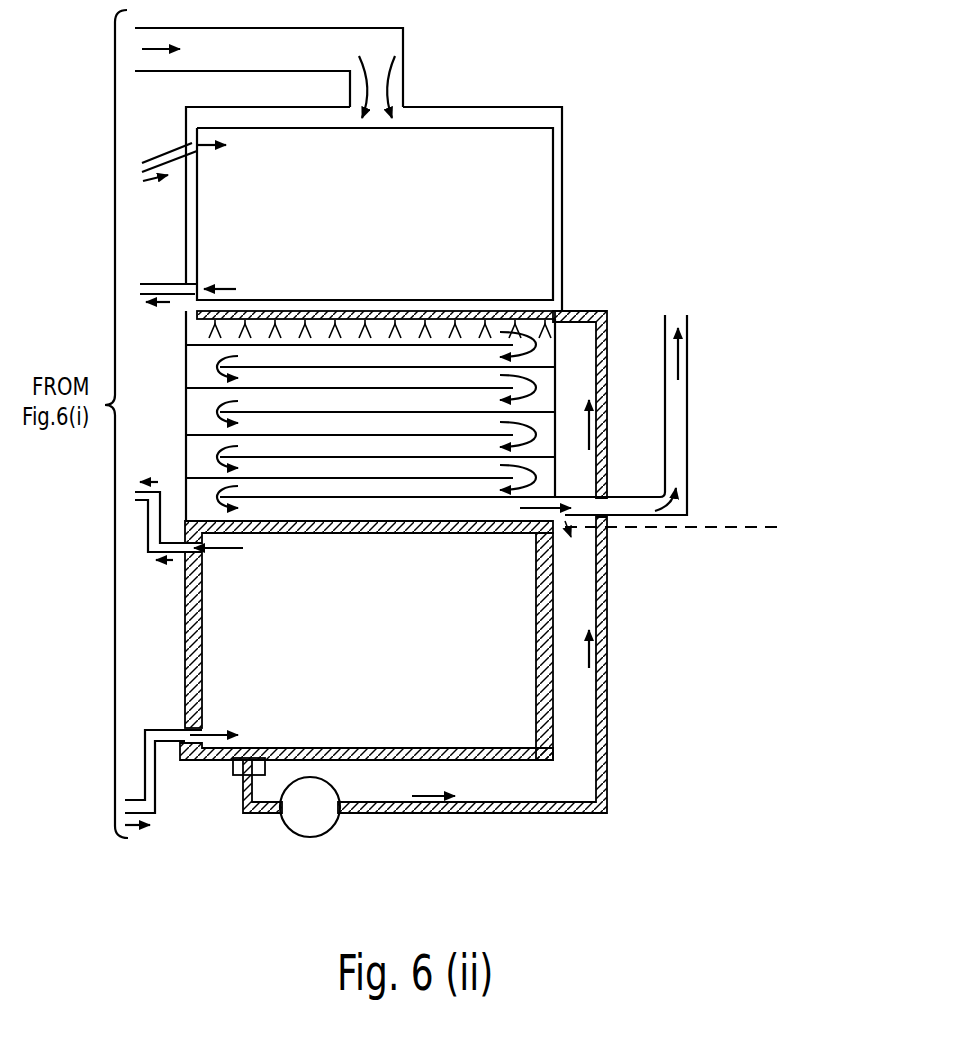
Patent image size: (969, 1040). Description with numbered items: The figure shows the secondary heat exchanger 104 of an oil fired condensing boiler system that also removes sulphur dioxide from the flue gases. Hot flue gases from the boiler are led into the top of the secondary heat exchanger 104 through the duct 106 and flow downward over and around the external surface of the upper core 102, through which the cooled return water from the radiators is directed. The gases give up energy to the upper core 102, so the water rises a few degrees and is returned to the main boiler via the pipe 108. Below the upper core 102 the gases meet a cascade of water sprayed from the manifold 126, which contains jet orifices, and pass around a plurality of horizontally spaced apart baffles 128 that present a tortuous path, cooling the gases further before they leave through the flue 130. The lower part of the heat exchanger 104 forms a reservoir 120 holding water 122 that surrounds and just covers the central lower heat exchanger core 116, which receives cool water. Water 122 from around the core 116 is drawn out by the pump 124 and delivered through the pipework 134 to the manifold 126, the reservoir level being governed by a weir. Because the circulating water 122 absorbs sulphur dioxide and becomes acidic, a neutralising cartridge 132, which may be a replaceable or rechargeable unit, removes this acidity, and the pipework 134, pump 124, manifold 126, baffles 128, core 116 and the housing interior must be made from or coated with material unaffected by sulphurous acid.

The upper core 102 is at (404, 259).
The secondary heat exchanger 104 is at (563, 115).
The duct 106 is at (405, 68).
The pipe 108 is at (160, 283).
The lower heat exchanger core 116 is at (400, 667).
The reservoir 120 is at (185, 633).
The water 122 is at (185, 607).
The pump 124 is at (338, 826).
The manifold 126 is at (512, 311).
The baffles 128 is at (392, 416).
The flue 130 is at (688, 420).
The neutralising cartridge 132 is at (236, 775).
The pipework 134 is at (462, 815).